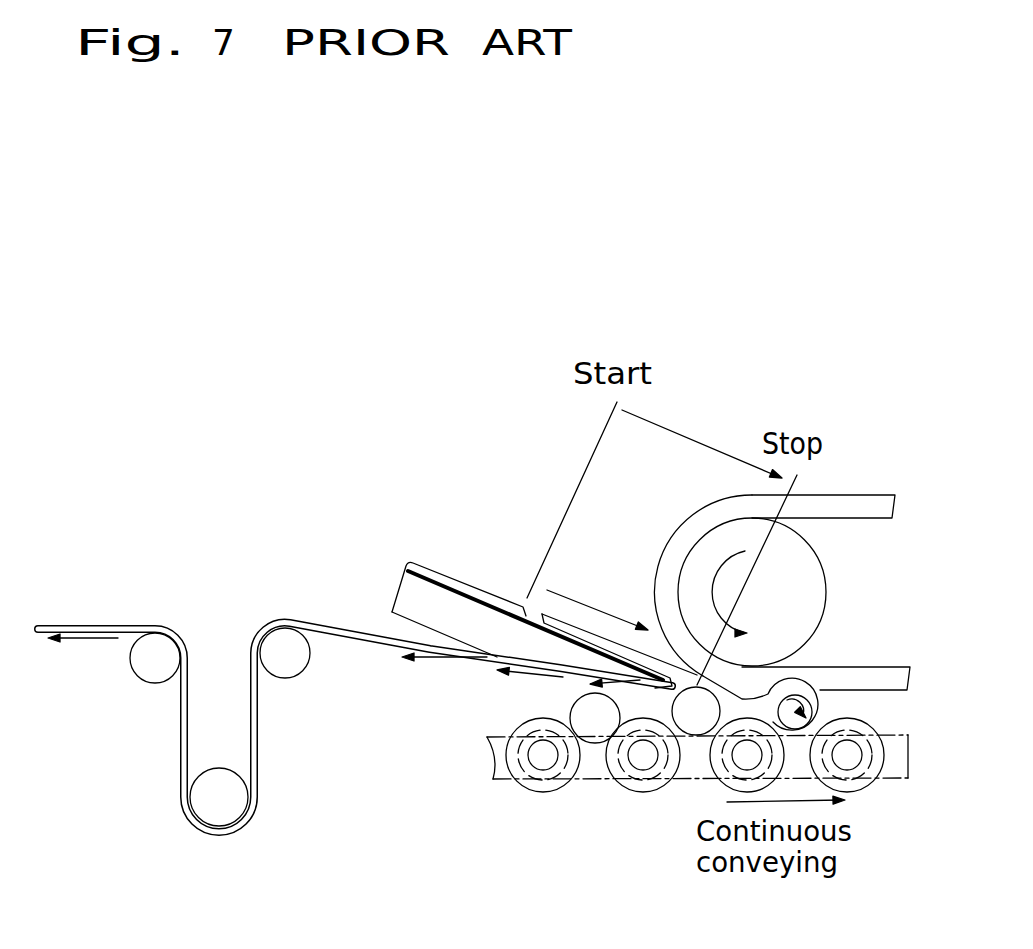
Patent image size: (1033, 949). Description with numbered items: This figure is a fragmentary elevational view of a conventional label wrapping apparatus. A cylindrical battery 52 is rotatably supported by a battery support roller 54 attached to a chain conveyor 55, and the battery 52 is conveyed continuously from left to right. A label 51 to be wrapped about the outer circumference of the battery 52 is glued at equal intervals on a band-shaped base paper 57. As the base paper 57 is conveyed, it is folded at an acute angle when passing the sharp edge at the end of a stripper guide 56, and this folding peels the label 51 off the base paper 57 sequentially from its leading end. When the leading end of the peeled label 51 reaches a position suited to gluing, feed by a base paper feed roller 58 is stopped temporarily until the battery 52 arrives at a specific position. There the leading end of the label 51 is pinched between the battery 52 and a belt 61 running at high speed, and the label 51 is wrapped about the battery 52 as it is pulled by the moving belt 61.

The label 51 is at (480, 590).
The cylindrical battery 52 is at (703, 720).
The battery support roller 54 is at (867, 787).
The chain conveyor 55 is at (598, 778).
The stripper guide 56 is at (435, 597).
The band-shaped base paper 57 is at (177, 715).
The base paper feed roller 58 is at (200, 800).
The belt 61 is at (865, 505).